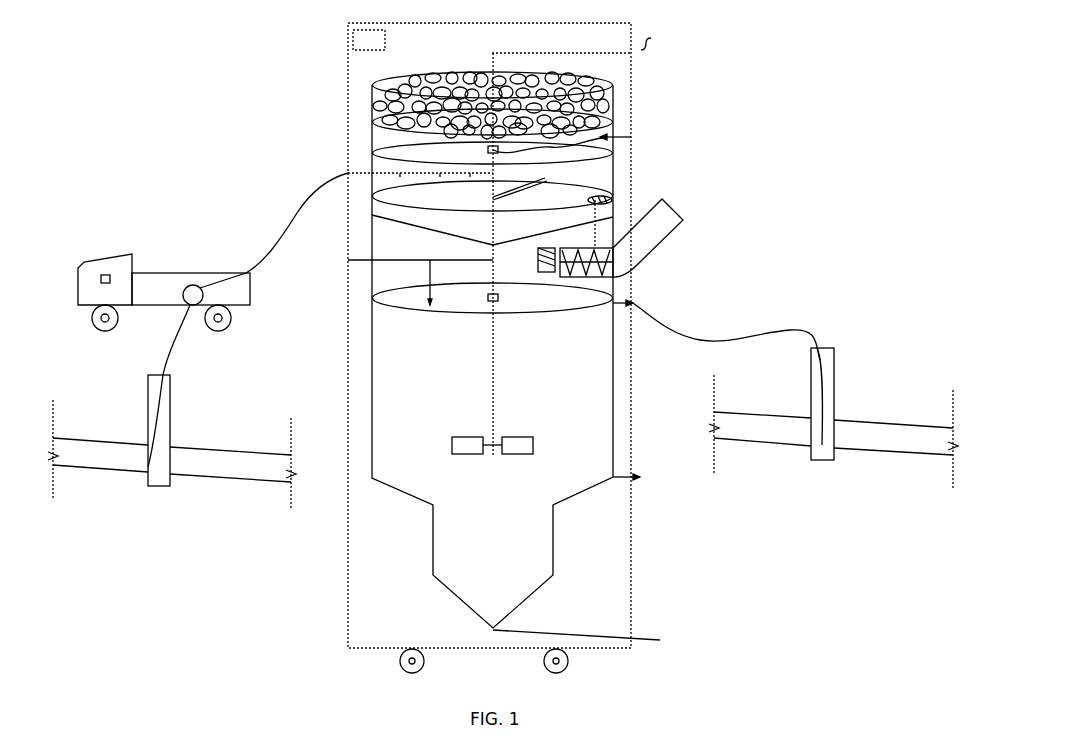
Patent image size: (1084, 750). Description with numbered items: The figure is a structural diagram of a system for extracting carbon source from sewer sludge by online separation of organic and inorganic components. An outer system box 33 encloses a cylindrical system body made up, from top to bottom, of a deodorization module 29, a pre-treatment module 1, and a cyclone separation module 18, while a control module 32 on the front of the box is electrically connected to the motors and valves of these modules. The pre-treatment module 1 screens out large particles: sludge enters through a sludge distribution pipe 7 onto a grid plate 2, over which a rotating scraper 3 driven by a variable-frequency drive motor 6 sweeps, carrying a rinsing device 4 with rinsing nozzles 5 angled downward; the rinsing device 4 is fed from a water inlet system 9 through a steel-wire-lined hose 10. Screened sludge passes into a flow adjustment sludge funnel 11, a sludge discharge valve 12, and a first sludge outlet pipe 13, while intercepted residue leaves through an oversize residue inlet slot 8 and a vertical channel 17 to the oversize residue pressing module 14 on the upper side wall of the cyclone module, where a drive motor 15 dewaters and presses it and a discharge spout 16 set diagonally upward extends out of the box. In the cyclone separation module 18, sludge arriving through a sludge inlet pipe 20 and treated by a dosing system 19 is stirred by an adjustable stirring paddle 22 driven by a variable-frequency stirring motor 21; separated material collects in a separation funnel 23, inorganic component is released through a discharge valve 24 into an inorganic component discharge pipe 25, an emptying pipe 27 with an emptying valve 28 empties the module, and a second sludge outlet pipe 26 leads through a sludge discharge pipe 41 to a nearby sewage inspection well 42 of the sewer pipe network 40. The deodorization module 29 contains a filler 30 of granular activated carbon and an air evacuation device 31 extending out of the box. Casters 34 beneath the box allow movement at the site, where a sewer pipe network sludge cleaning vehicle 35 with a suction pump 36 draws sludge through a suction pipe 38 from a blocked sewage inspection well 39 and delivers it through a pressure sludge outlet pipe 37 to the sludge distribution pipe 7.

The pre-treatment module 1 is at (432, 158).
The grid plate 2 is at (578, 190).
The rotating scraper 3 is at (515, 193).
The rinsing device 4 is at (520, 185).
The rinsing nozzle 5 is at (555, 176).
The variable-frequency drive motor 6 is at (487, 152).
The sludge distribution pipe 7 is at (385, 175).
The oversize residue inlet slot 8 is at (597, 197).
The water inlet system 9 is at (620, 137).
The hose 10 is at (540, 150).
The flow adjustment sludge funnel 11 is at (440, 233).
The sludge discharge valve 12 is at (494, 248).
The first sludge outlet pipe 13 is at (465, 263).
The oversize residue pressing module 14 is at (590, 248).
The drive motor 15 is at (538, 261).
The discharge spout 16 is at (683, 212).
The vertical channel 17 is at (594, 243).
The cyclone separation module 18 is at (372, 383).
The dosing system 19 is at (386, 262).
The sludge inlet pipe 20 is at (426, 276).
The variable-frequency stirring motor 21 is at (503, 298).
The adjustable stirring paddle 22 is at (517, 437).
The separation funnel 23 is at (553, 548).
The discharge valve 24 is at (495, 627).
The inorganic component discharge pipe 25 is at (568, 630).
The second sludge outlet pipe 26 is at (632, 303).
The emptying pipe 27 is at (620, 481).
The emptying valve 28 is at (617, 476).
The deodorization module 29 is at (590, 80).
The filler 30 is at (428, 78).
The air evacuation device 31 is at (582, 53).
The control module 32 is at (370, 50).
The outer system box 33 is at (492, 25).
The caster 34 is at (425, 668).
The sewer pipe network sludge cleaning vehicle 35 is at (190, 273).
The suction pump 36 is at (183, 293).
The pressure sludge outlet pipe 37 is at (283, 236).
The suction pipe 38 is at (168, 350).
The blocked sewage inspection well 39 is at (172, 405).
The sewer pipe network 40 is at (215, 448).
The sludge discharge pipe 41 is at (790, 330).
The sewage inspection well 42 is at (834, 365).